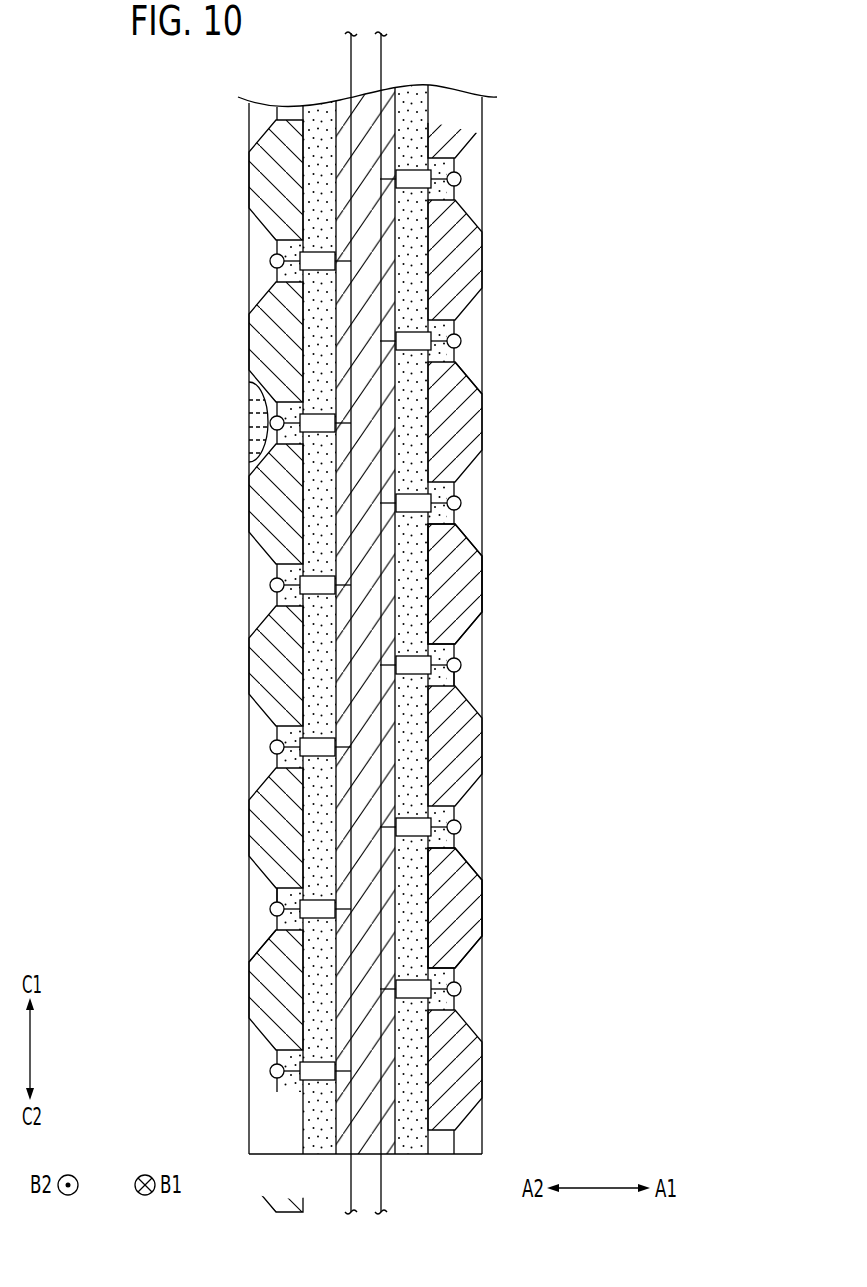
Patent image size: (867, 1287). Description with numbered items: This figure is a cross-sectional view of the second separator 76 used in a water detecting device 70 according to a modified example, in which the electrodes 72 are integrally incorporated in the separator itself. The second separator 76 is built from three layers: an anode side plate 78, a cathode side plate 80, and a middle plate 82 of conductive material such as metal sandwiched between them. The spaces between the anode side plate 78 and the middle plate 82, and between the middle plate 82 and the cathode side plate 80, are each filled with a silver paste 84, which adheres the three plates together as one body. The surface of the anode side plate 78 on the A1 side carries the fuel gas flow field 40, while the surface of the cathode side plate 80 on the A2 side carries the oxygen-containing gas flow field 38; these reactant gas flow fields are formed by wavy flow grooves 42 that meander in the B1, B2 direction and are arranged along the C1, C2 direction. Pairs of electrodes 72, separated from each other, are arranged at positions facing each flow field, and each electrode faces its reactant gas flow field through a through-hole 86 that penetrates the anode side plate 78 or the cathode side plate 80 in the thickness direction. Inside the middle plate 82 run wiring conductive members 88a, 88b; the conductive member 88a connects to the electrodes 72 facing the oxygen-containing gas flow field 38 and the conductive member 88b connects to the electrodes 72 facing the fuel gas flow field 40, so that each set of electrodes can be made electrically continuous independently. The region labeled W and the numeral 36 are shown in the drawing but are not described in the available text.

The water detecting device 70 is at (572, 46).
The second separator 76 is at (413, 60).
The middle plate 82 is at (364, 143).
The cathode side plate 80 is at (273, 187).
The electrodes 72 is at (270, 258).
The oxygen-containing gas flow field 38 is at (246, 283).
The stator core side surface 36 is at (246, 611).
The weld portion W is at (262, 410).
The anode side plate 78 is at (463, 262).
The wavy flow grooves 42 is at (462, 395).
The fuel gas flow field 40 is at (470, 533).
The through-hole 86 is at (274, 896).
The silver paste 84 is at (322, 1118).
The conductive member 88a is at (351, 1181).
The conductive member 88b is at (382, 1181).